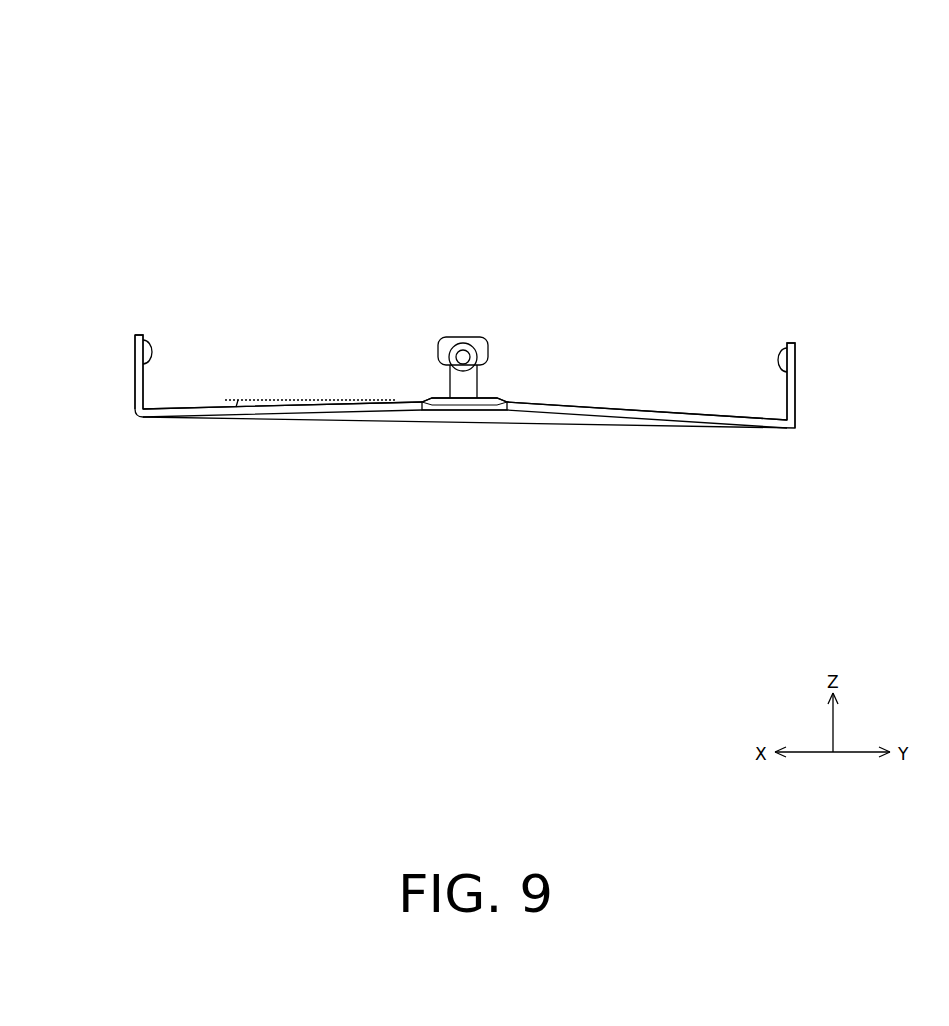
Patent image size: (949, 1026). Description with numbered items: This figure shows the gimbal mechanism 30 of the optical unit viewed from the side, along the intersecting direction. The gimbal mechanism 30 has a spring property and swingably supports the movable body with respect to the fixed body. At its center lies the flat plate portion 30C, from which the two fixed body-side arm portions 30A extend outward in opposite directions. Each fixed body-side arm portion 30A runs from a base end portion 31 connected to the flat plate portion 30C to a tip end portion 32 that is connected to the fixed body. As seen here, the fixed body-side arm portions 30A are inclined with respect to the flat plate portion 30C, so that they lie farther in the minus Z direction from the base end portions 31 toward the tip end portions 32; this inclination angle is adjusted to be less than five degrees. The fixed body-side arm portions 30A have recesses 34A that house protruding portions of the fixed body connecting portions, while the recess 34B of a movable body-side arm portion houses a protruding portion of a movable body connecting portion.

The gimbal mechanism 30 is at (823, 85).
The fixed body-side arm portion 30A is at (288, 418).
The flat plate portion 30C is at (462, 412).
The base end portion 31 is at (378, 400).
The tip end portion 32 is at (135, 389).
The recess 34A is at (153, 353).
The recess 34B is at (466, 347).